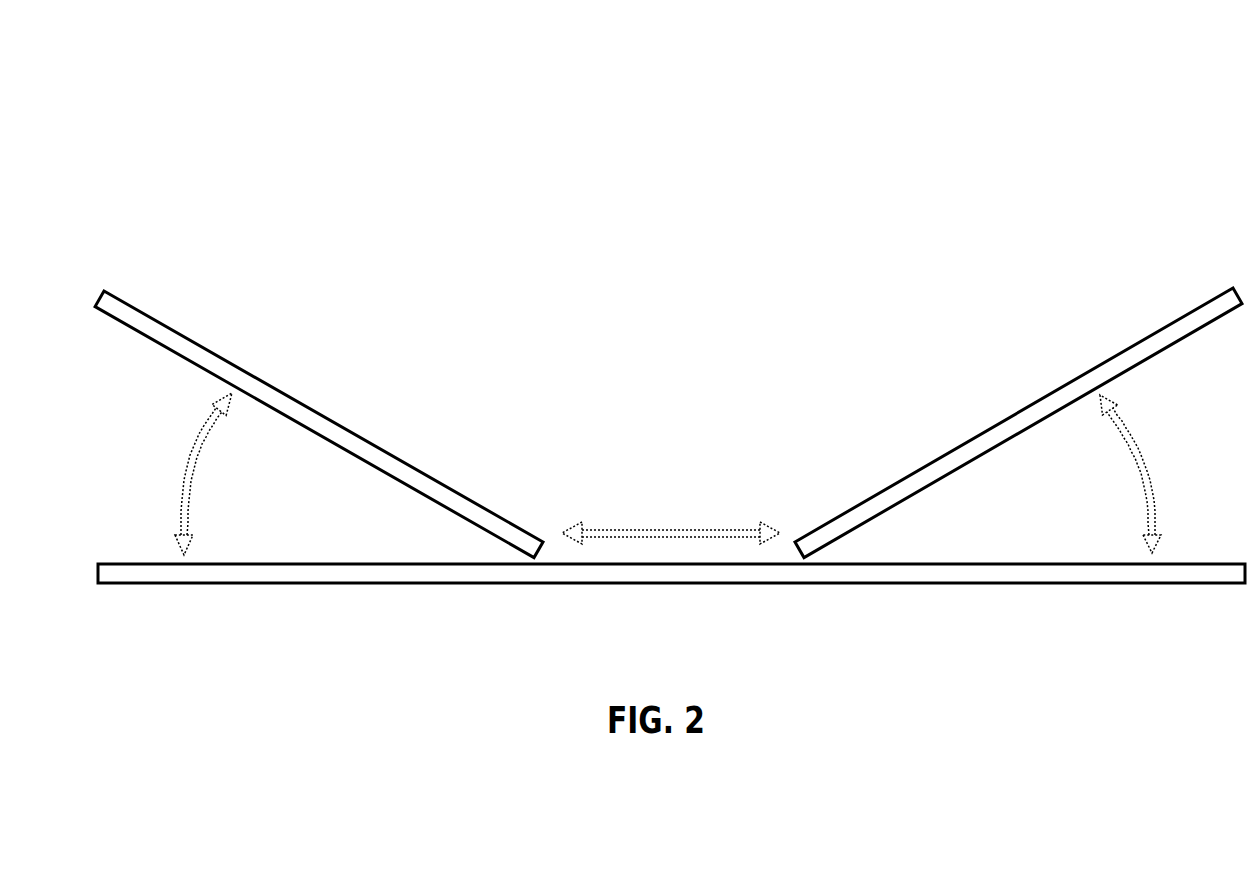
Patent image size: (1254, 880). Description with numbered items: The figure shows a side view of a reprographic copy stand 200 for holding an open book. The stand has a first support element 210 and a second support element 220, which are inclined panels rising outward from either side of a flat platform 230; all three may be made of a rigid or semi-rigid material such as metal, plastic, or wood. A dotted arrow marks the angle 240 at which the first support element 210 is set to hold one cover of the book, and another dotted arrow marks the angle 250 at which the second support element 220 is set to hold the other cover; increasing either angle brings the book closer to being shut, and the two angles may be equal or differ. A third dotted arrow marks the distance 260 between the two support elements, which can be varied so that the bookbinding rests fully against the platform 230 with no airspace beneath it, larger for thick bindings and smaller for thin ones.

The reprographic copy stand 200 is at (176, 121).
The first support element 210 is at (160, 322).
The second support element 220 is at (1165, 326).
The platform 230 is at (1020, 563).
The angle 240 is at (185, 482).
The angle 250 is at (1150, 476).
The distance 260 is at (665, 530).